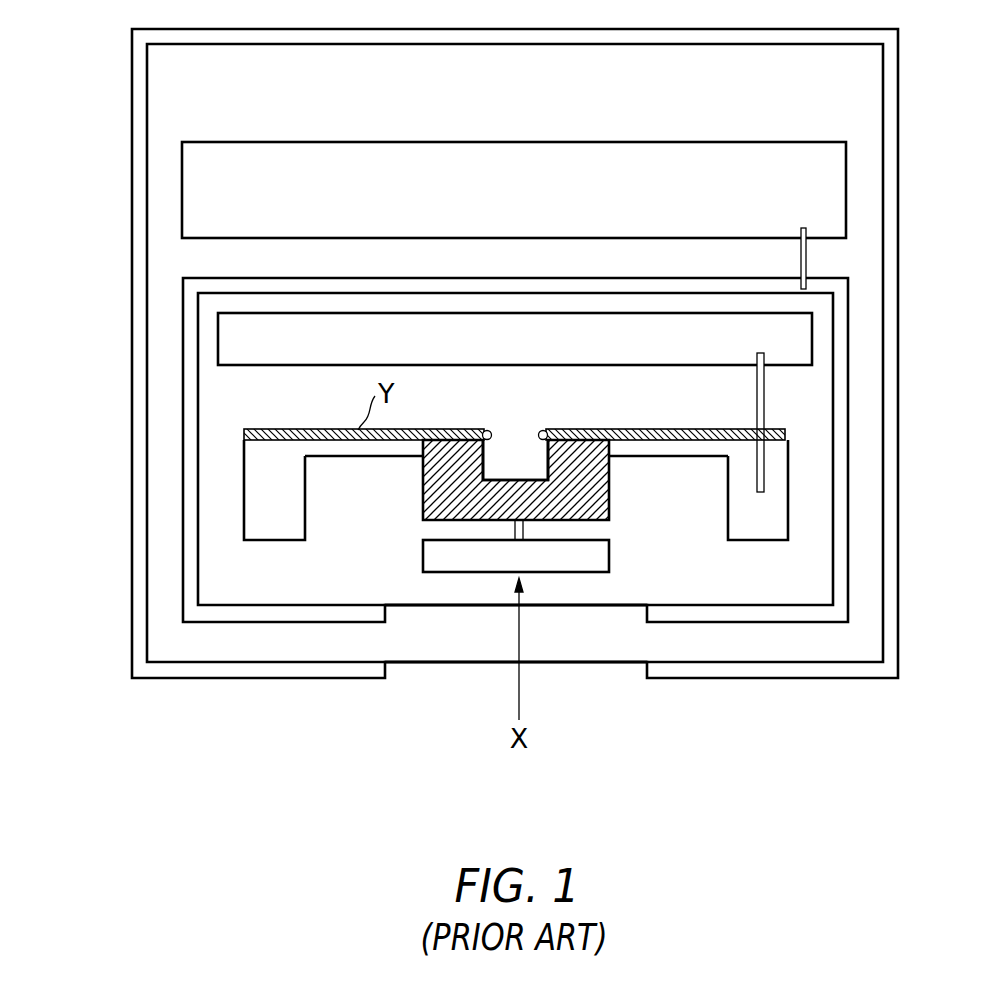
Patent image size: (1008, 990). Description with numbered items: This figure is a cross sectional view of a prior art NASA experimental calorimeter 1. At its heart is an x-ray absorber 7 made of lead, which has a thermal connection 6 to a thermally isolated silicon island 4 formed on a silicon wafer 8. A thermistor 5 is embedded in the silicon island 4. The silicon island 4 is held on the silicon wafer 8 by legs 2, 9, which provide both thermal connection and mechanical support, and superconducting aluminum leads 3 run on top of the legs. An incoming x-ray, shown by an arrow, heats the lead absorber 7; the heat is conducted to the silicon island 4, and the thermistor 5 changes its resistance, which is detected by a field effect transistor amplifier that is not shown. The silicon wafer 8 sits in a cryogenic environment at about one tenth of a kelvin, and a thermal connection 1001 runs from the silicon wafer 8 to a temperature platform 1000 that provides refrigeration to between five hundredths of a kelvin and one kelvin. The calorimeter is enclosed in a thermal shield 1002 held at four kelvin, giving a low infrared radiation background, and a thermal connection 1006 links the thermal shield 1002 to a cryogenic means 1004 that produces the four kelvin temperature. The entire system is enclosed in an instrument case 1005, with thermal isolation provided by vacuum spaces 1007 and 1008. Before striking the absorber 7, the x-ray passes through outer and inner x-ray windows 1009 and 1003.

The instrument case 1005 is at (138, 60).
The vacuum space 1008 is at (167, 595).
The cryogenic means 1004 is at (197, 173).
The thermal shield 1002 is at (192, 423).
The vacuum space 1007 is at (213, 523).
The temperature platform 1000 is at (225, 342).
The thermal connection 1006 is at (801, 262).
The thermal connection 1001 is at (757, 408).
The x-ray window 1003 is at (480, 606).
The x-ray window 1009 is at (597, 663).
The experimental calorimeter 1 is at (304, 428).
The leg 2 is at (650, 447).
The superconducting Al lead 3 is at (655, 433).
The silicon island 4 is at (605, 492).
The thermistor 5 is at (507, 457).
The thermal connection 6 is at (513, 530).
The x-ray absorber 7 is at (602, 552).
The silicon wafer 8 is at (728, 497).
The leg 9 is at (377, 456).